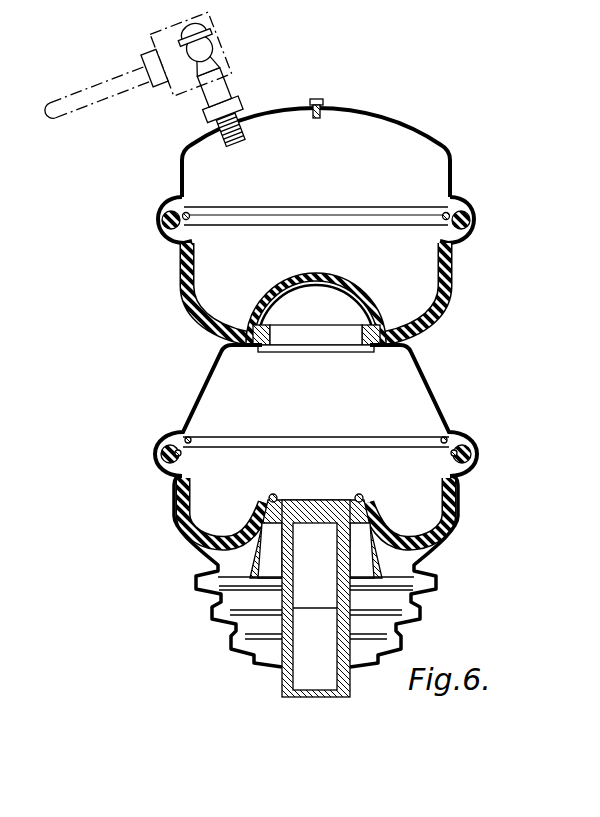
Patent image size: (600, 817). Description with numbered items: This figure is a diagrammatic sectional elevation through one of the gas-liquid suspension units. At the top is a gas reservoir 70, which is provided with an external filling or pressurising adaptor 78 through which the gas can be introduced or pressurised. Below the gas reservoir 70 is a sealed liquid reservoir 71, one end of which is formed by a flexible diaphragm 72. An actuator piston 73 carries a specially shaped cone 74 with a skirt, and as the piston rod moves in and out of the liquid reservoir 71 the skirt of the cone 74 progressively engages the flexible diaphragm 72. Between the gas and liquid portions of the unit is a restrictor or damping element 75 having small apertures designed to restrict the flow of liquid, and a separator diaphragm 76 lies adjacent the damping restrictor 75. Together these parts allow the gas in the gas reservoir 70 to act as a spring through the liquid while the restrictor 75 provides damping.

The gas reservoir 70 is at (398, 124).
The sealed liquid reservoir 71 is at (208, 392).
The flexible diaphragm 72 is at (216, 533).
The actuator piston 73 is at (284, 666).
The cone 74 is at (256, 558).
The restrictor or damping element 75 is at (329, 291).
The separator diaphragm 76 is at (322, 282).
The external filling or pressurising adaptor 78 is at (214, 72).